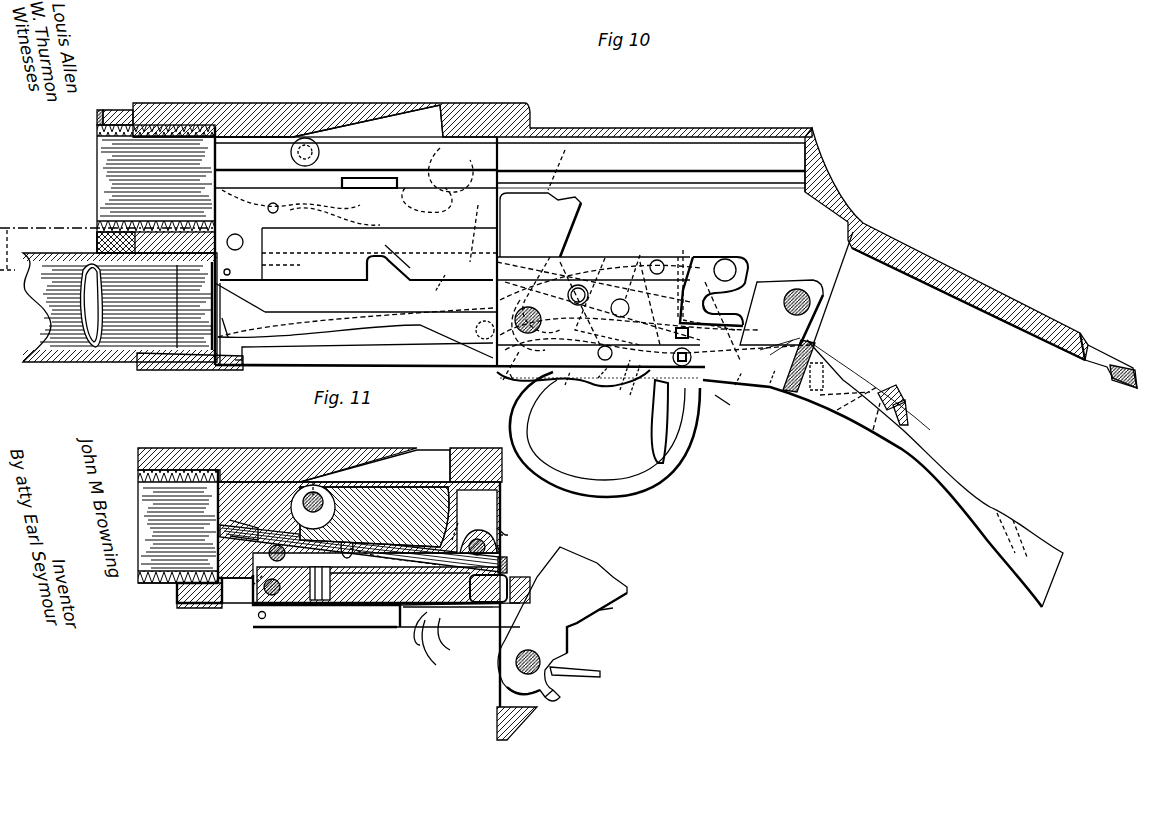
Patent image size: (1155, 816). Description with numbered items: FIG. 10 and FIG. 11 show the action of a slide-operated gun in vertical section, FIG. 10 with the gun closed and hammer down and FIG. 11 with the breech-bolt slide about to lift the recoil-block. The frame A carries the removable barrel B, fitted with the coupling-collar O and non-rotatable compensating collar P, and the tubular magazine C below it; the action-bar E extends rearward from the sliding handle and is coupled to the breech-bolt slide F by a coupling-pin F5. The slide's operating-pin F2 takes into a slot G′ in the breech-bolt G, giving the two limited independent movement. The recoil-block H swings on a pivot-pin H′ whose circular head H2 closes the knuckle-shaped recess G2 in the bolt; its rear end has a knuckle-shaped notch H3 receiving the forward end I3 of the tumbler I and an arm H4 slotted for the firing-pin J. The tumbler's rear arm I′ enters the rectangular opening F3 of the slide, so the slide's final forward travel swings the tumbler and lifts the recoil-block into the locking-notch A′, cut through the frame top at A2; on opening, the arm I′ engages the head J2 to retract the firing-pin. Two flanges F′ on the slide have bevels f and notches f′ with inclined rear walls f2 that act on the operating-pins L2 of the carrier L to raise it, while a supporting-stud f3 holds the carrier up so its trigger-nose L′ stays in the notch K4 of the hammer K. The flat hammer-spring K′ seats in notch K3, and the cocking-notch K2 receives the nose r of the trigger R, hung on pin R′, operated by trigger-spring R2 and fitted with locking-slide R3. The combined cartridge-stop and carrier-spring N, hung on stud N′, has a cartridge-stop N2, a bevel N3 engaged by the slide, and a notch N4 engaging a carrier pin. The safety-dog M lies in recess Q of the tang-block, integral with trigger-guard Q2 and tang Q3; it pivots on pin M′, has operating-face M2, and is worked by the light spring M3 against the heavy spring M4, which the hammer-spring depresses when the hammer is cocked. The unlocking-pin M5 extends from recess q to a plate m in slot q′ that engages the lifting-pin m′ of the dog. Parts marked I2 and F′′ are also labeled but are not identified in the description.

In FIG. 11, the frame A is at (162, 446).
In FIG. 10, the locking-notch A′ is at (380, 103).
In FIG. 11, the locking-notch A′ is at (372, 460).
In FIG. 10, the notch opening through top of frame A2 is at (448, 103).
In FIG. 11, the notch opening through top of frame A2 is at (448, 470).
In FIG. 10, the barrel B is at (97, 133).
In FIG. 11, the barrel B is at (138, 480).
In FIG. 10, the tubular magazine C is at (48, 305).
In FIG. 10, the action-bar E is at (62, 226).
In FIG. 10, the compensating collar P is at (100, 110).
In FIG. 10, the coupling-collar O is at (118, 110).
In FIG. 10, the breech-bolt G is at (237, 234).
In FIG. 11, the breech-bolt G is at (258, 482).
In FIG. 10, the slot G′ is at (316, 233).
In FIG. 11, the slot G′ is at (253, 585).
In FIG. 10, the knuckle-shaped recess G2 is at (278, 103).
In FIG. 11, the knuckle-shaped recess G2 is at (477, 520).
In FIG. 10, the recoil-block H is at (356, 142).
In FIG. 11, the recoil-block H is at (370, 516).
In FIG. 10, the pivot-pin H′ is at (318, 137).
In FIG. 11, the pivot-pin H′ is at (313, 482).
In FIG. 10, the circular head H2 is at (320, 153).
In FIG. 10, the knuckle-shaped notch H3 is at (368, 121).
In FIG. 11, the knuckle-shaped notch H3 is at (375, 466).
In FIG. 10, the arm H4 is at (427, 196).
In FIG. 11, the arm H4 is at (420, 612).
In FIG. 10, the operating-tumbler I is at (492, 170).
In FIG. 11, the operating-tumbler I is at (500, 550).
In FIG. 10, the rear arm of tumbler I′ is at (470, 262).
In FIG. 11, the rear arm of tumbler I′ is at (488, 588).
In FIG. 10, the firing pin rod I2 is at (500, 181).
In FIG. 11, the firing pin rod I2 is at (500, 536).
In FIG. 10, the forward end of tumbler upper arm I3 is at (455, 174).
In FIG. 11, the forward end of tumbler upper arm I3 is at (458, 523).
In FIG. 10, the firing-pin J is at (322, 190).
In FIG. 11, the firing-pin J is at (237, 590).
In FIG. 11, the head of firing-pin J2 is at (503, 558).
In FIG. 10, the hammer K is at (540, 225).
In FIG. 11, the hammer K is at (613, 608).
In FIG. 10, the hammer-spring K′ is at (765, 282).
In FIG. 11, the hammer-spring K′ is at (585, 675).
In FIG. 10, the cocking-notch K2 is at (641, 254).
In FIG. 11, the cocking-notch K2 is at (550, 693).
In FIG. 10, the notch for hammer-spring K3 is at (503, 380).
In FIG. 11, the notch for hammer-spring K3 is at (553, 660).
In FIG. 10, the notch in top of hammer K4 is at (565, 150).
In FIG. 11, the notch in top of hammer K4 is at (567, 622).
In FIG. 10, the cartridge-carrier L is at (367, 352).
In FIG. 10, the trigger-nose L′ is at (678, 257).
In FIG. 10, the operating-pins L2 is at (730, 260).
In FIG. 10, the safety-dog M is at (605, 258).
In FIG. 10, the safety-dog pin M′ is at (626, 299).
In FIG. 10, the operating-face M2 is at (549, 256).
In FIG. 10, the light safety-dog spring M3 is at (565, 385).
In FIG. 10, the heavy safety-dog spring M4 is at (735, 385).
In FIG. 10, the unlocking-pin M5 is at (733, 400).
In FIG. 10, the plate m is at (676, 332).
In FIG. 10, the lifting-pin m′ is at (705, 275).
In FIG. 10, the combined cartridge-stop and carrier-spring N is at (383, 318).
In FIG. 10, the stud N′ is at (483, 340).
In FIG. 10, the cartridge-stop N2 is at (270, 310).
In FIG. 10, the bevel N3 is at (250, 300).
In FIG. 10, the notch N4 is at (722, 302).
In FIG. 10, the recess Q is at (708, 279).
In FIG. 10, the trigger-guard Q2 is at (605, 434).
In FIG. 10, the tang Q3 is at (850, 410).
In FIG. 10, the recess q is at (692, 354).
In FIG. 10, the rectangular slot q′ is at (630, 395).
In FIG. 10, the trigger R is at (660, 430).
In FIG. 10, the trigger pin R′ is at (620, 390).
In FIG. 10, the trigger-spring R2 is at (770, 383).
In FIG. 10, the locking-slide R3 is at (598, 378).
In FIG. 10, the trigger nose r is at (510, 390).
In FIG. 11, the breech-bolt slide F is at (350, 606).
In FIG. 10, the flanges F′ is at (310, 247).
In FIG. 11, the flanges F′ is at (372, 606).
In FIG. 10, the carrier block bottom F′′ is at (356, 268).
In FIG. 11, the carrier block bottom F′′ is at (396, 608).
In FIG. 10, the operating-pin F2 is at (283, 232).
In FIG. 11, the operating-pin F2 is at (318, 605).
In FIG. 10, the rectangular opening F3 is at (445, 275).
In FIG. 11, the rectangular opening F3 is at (520, 577).
In FIG. 10, the coupling-pin F5 is at (270, 212).
In FIG. 11, the coupling-pin F5 is at (268, 597).
In FIG. 11, the bevels f is at (508, 614).
In FIG. 10, the notch f′ is at (395, 280).
In FIG. 11, the notch f′ is at (429, 648).
In FIG. 11, the inclined rear wall f2 is at (444, 634).
In FIG. 10, the supporting-stud f3 is at (230, 272).
In FIG. 11, the supporting-stud f3 is at (263, 620).